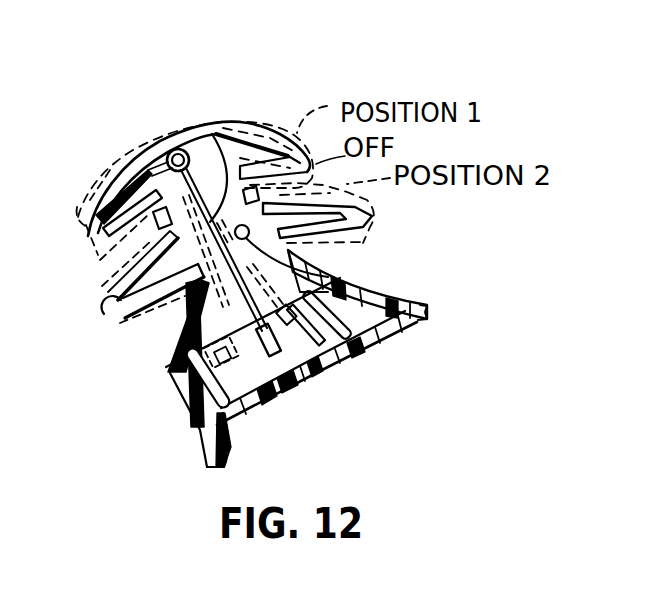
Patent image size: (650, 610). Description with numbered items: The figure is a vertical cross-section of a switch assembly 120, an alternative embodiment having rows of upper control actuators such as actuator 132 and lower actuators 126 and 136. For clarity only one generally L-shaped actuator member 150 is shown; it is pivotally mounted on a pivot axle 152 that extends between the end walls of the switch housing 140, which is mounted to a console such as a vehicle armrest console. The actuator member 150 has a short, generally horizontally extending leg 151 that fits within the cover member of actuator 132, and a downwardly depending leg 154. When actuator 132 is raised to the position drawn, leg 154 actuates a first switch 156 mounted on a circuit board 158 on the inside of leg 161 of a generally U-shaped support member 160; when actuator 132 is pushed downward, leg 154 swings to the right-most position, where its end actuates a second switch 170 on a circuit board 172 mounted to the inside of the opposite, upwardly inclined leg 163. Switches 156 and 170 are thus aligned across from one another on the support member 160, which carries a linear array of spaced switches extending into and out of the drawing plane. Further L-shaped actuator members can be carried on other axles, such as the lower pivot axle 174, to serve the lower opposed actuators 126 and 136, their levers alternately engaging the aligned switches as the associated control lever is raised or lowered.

The switch assembly 120 is at (100, 160).
The lower actuator 126 is at (373, 218).
The upper control actuator 132 is at (92, 195).
The lower actuator 136 is at (104, 314).
The switch housing 140 is at (388, 288).
The actuator member 150 is at (212, 132).
The short horizontally extending leg 151 is at (138, 168).
The pivot axle 152 is at (178, 149).
The downwardly depending leg 154 is at (273, 392).
The first switch 156 is at (187, 397).
The circuit board 158 is at (231, 409).
The support member 160 is at (298, 358).
The leg 161 is at (172, 371).
The leg 163 is at (384, 321).
The second switch 170 is at (322, 356).
The circuit board 172 is at (364, 346).
The lower pivot axle 174 is at (329, 276).